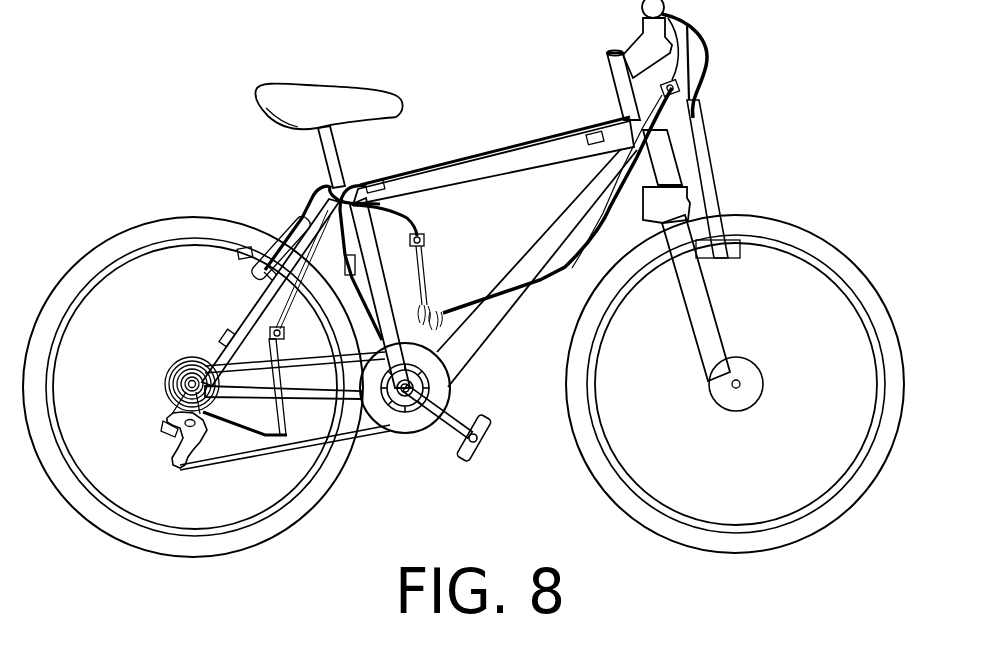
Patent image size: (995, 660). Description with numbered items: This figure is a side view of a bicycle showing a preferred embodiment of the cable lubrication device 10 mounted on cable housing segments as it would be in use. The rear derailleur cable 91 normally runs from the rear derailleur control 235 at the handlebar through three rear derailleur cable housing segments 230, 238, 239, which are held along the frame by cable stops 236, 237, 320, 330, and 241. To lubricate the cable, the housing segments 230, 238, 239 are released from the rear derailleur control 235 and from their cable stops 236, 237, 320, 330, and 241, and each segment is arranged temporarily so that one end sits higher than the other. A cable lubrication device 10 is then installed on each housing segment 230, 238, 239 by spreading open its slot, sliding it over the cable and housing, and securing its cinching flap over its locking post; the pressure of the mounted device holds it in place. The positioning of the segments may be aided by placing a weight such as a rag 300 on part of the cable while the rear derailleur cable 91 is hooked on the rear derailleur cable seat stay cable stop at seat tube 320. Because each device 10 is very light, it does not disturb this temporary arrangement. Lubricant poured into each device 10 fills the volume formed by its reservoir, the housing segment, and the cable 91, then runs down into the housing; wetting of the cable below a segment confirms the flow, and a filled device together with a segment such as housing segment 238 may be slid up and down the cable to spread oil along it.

The cable lubrication device 10 is at (425, 239).
The rear derailleur cable 91 is at (544, 287).
The rear derailleur cable housing segment 230 is at (648, 152).
The rear derailleur control 235 is at (641, 9).
The cable stop 236 is at (586, 133).
The cable stop 237 is at (390, 190).
The rear derailleur cable housing segment 238 is at (429, 265).
The rear derailleur cable housing segment 239 is at (281, 437).
The cable stop 241 is at (170, 430).
The rag 300 is at (447, 330).
The rear derailleur cable seat stay cable stop at seat tube 320 is at (308, 207).
The cable stop 330 is at (222, 336).